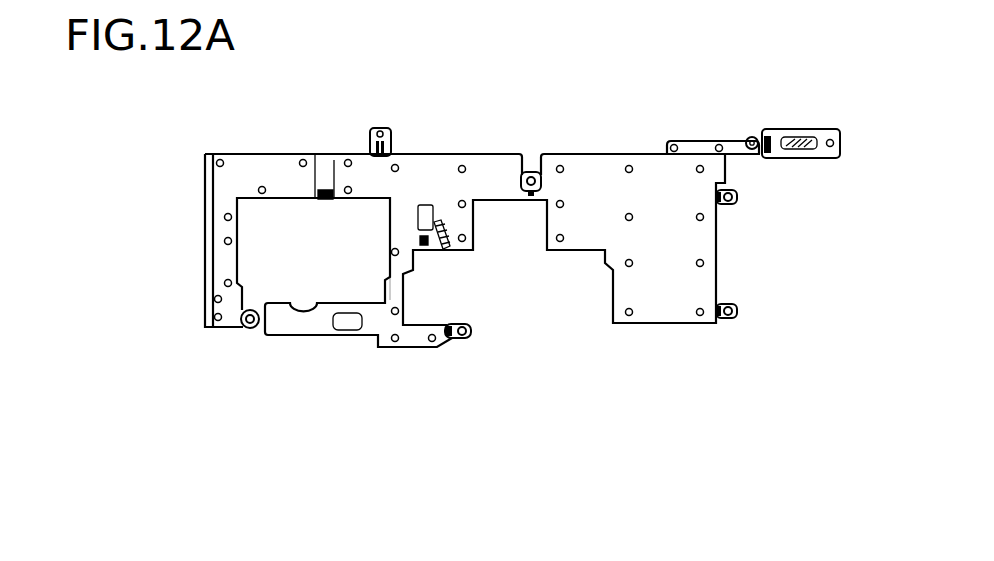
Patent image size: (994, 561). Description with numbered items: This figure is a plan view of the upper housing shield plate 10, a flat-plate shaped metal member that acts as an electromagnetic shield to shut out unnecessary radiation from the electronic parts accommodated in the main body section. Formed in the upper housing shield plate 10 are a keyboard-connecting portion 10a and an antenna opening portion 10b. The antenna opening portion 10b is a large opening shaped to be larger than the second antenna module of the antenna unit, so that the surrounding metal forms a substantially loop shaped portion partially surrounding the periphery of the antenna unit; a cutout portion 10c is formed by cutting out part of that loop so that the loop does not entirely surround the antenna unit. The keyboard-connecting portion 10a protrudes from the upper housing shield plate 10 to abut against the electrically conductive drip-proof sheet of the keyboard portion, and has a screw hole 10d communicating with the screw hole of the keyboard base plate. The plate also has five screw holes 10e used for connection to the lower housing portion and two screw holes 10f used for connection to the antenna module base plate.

The upper housing shield plate 10 is at (639, 80).
The keyboard-connecting portion 10a is at (369, 133).
The antenna opening portion 10b is at (232, 265).
The cutout portion 10c is at (752, 136).
The screw hole 10d is at (380, 127).
The screw holes 10e is at (531, 172).
The screw holes 10f is at (224, 217).